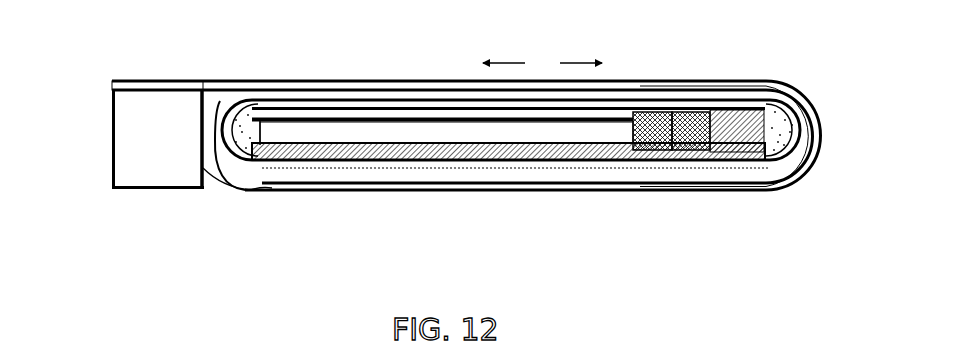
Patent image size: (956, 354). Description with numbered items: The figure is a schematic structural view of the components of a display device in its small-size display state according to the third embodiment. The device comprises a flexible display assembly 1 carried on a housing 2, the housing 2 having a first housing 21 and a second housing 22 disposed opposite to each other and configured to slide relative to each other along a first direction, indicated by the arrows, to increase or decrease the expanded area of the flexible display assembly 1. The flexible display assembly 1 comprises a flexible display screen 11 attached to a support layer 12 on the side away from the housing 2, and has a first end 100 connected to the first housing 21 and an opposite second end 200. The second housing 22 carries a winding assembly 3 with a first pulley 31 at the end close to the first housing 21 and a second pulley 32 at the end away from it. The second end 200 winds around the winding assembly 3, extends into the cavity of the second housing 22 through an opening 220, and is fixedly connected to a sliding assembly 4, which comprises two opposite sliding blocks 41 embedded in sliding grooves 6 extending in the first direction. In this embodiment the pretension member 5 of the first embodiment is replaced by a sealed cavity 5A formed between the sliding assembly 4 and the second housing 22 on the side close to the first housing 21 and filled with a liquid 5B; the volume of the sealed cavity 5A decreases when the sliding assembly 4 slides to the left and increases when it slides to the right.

The first end 100 is at (119, 80).
The flexible display assembly 1 is at (167, 94).
The flexible display screen 11 is at (163, 82).
The support layer 12 is at (202, 90).
The housing 2 is at (210, 129).
The first housing 21 is at (113, 154).
The second housing 22 is at (238, 182).
The opening 220 is at (268, 188).
The winding assembly 3 is at (536, 93).
The first pulley 31 is at (243, 103).
The second pulley 32 is at (806, 96).
The pretension member 5 is at (508, 124).
The sealed cavity 5A is at (399, 150).
The liquid 5B is at (497, 137).
The sliding groove 6 is at (451, 152).
The sliding assembly 4 is at (674, 188).
The sliding block 41 is at (660, 152).
The second end 200 is at (706, 144).